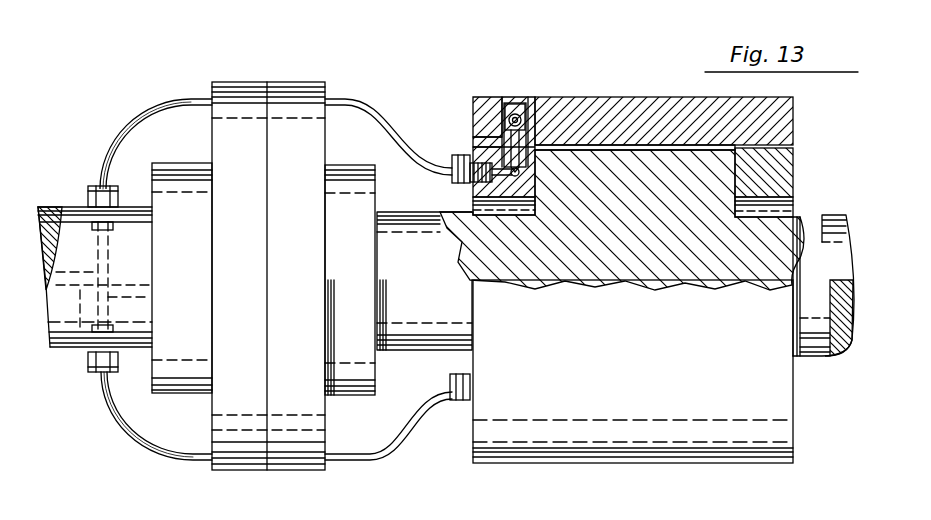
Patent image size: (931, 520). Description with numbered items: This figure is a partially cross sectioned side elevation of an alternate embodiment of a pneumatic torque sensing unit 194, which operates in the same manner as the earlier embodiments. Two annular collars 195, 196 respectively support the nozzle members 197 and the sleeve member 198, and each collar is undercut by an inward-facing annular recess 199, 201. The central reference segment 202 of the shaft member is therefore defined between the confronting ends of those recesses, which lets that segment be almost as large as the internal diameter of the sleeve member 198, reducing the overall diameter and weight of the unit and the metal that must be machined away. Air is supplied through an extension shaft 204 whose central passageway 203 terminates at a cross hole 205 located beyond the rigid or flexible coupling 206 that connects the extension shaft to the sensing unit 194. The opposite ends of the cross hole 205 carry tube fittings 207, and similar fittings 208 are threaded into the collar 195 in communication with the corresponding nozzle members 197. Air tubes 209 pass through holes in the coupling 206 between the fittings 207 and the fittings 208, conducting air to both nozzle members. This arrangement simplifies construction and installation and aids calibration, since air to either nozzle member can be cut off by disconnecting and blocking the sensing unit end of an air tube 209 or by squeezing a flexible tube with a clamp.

The torque sensing unit 194 is at (568, 86).
The annular collar 195 is at (480, 135).
The annular collar 196 is at (793, 163).
The nozzle member 197 is at (515, 110).
The sleeve member 198 is at (792, 118).
The annular recess 199 is at (498, 207).
The annular recess 201 is at (797, 212).
The central reference segment 202 is at (617, 147).
The central passageway 203 is at (80, 330).
The extension shaft 204 is at (78, 335).
The cross hole 205 is at (118, 315).
The coupling 206 is at (238, 455).
The tube fitting 207 is at (90, 195).
The fitting 208 is at (455, 182).
The air tube 209 is at (152, 108).